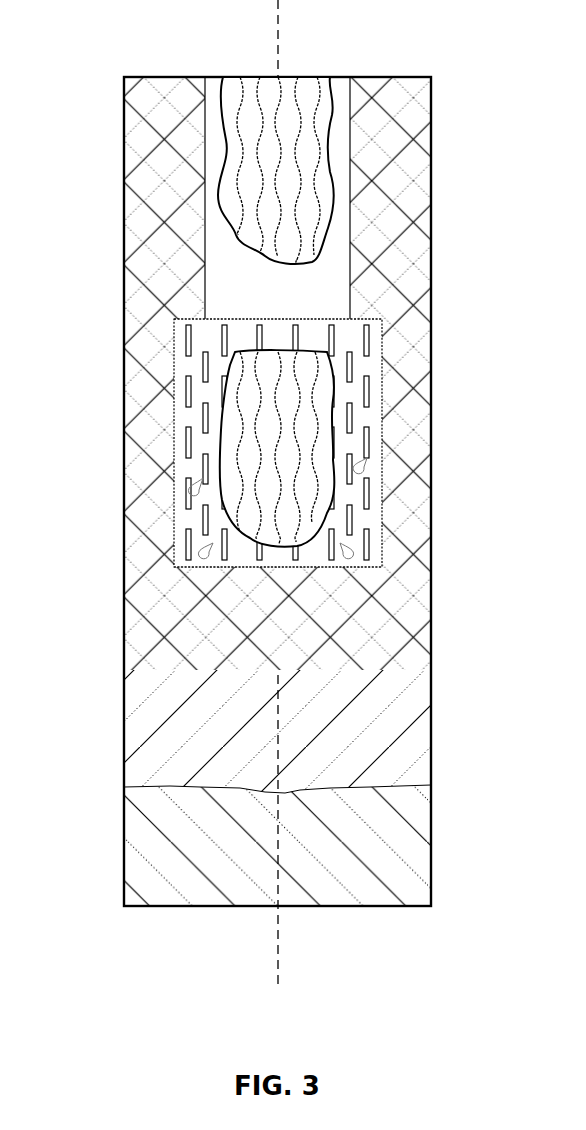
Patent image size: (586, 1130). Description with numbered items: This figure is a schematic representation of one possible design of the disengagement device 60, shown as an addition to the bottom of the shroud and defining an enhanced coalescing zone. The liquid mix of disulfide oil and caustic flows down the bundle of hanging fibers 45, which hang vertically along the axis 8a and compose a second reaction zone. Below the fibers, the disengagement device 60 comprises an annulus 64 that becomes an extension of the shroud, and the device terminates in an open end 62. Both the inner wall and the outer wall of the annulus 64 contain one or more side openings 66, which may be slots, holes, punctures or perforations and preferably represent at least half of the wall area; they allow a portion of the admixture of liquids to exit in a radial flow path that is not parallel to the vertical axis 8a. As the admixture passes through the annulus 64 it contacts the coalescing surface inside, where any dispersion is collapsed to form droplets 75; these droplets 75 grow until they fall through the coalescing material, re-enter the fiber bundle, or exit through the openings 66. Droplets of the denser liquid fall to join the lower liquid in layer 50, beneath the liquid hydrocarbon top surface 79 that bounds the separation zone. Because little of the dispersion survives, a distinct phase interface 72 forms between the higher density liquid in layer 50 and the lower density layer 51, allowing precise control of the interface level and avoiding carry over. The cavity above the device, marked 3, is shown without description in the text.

The nozzle channel 3 is at (350, 240).
The bundle of hanging fibers 45 is at (250, 104).
The layer 50 is at (187, 863).
The lower density layer 51 is at (187, 741).
The disengagement device 60 is at (183, 521).
The open end 62 is at (342, 574).
The annulus 64 is at (204, 324).
The side openings 66 is at (182, 377).
The phase interface 72 is at (402, 797).
The droplets 75 is at (366, 463).
The liquid hydrocarbon top surface 79 is at (412, 676).
The axis 8a is at (280, 945).